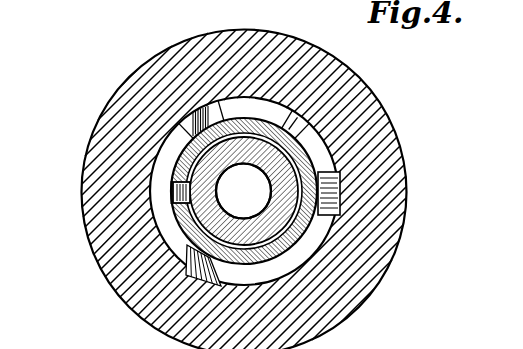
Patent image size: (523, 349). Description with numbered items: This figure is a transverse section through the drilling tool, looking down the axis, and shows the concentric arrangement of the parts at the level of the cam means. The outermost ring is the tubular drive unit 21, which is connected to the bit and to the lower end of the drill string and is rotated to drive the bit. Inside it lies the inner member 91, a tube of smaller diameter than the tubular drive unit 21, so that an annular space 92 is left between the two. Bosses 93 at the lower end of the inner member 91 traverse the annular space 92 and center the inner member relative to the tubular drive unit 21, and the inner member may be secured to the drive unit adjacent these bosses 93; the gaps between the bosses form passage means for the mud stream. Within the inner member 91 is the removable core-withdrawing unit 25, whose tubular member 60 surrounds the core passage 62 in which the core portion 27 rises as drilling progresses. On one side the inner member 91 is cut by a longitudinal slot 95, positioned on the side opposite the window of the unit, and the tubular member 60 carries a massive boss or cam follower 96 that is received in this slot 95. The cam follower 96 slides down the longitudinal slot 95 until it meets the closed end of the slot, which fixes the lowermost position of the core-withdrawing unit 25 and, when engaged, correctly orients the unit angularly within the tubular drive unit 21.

The tubular drive unit 21 is at (80, 142).
The core-withdrawing unit 25 is at (187, 152).
The core portion 27 is at (251, 192).
The tubular member 60 is at (304, 227).
The core passage 62 is at (243, 191).
The inner member 91 is at (299, 113).
The annular space 92 is at (313, 146).
The bosses 93 is at (339, 172).
The longitudinal slot 95 is at (172, 191).
The cam follower 96 is at (172, 199).